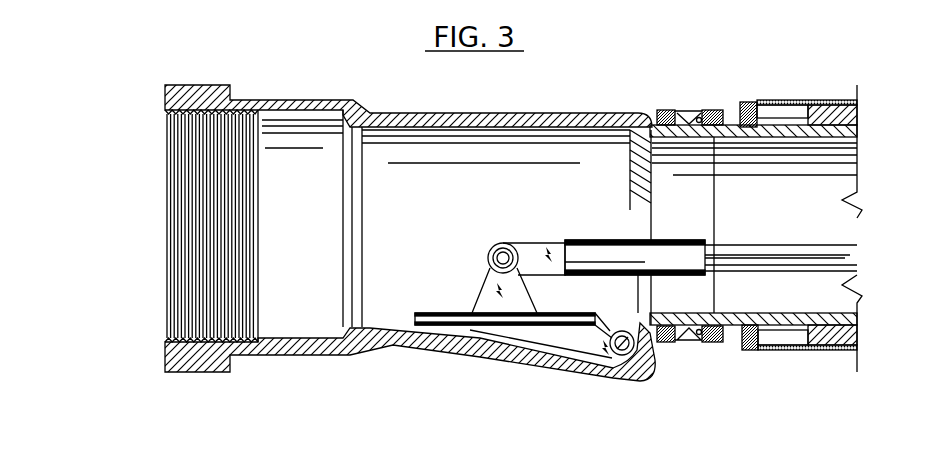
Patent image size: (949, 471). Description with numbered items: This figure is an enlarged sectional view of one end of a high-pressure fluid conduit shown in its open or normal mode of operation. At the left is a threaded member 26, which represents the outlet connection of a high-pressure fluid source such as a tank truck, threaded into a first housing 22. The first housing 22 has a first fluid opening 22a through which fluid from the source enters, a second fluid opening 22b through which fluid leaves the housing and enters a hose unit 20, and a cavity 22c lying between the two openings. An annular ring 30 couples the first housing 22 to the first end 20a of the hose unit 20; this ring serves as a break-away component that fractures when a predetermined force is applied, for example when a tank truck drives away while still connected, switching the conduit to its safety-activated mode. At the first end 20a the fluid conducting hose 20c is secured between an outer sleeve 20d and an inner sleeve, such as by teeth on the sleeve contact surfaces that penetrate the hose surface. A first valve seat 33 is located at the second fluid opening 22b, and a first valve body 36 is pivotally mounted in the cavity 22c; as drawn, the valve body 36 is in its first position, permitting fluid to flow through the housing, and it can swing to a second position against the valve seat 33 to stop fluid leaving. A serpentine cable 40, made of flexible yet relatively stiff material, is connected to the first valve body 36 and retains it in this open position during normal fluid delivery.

The hose unit 20 is at (825, 77).
The first end of hose unit 20a is at (777, 351).
The fluid conducting hose 20c is at (840, 348).
The outer sleeve 20d is at (769, 102).
The first housing 22 is at (434, 380).
The first fluid opening 22a is at (342, 152).
The second fluid opening 22b is at (632, 192).
The cavity 22c is at (436, 204).
The threaded member 26 is at (166, 220).
The annular ring 30 is at (696, 106).
The first valve seat 33 is at (652, 326).
The first valve body 36 is at (512, 328).
The serpentine cable 40 is at (833, 243).